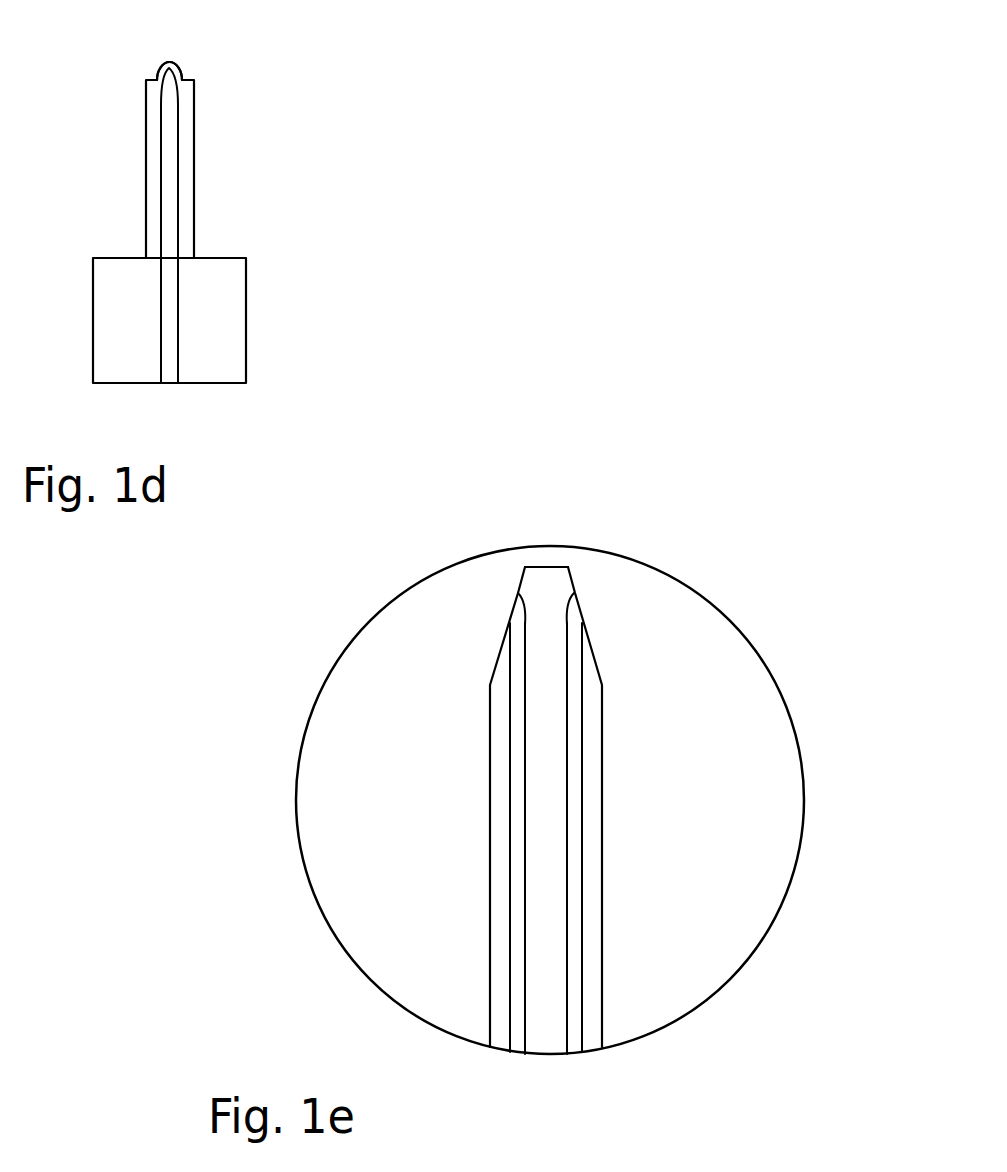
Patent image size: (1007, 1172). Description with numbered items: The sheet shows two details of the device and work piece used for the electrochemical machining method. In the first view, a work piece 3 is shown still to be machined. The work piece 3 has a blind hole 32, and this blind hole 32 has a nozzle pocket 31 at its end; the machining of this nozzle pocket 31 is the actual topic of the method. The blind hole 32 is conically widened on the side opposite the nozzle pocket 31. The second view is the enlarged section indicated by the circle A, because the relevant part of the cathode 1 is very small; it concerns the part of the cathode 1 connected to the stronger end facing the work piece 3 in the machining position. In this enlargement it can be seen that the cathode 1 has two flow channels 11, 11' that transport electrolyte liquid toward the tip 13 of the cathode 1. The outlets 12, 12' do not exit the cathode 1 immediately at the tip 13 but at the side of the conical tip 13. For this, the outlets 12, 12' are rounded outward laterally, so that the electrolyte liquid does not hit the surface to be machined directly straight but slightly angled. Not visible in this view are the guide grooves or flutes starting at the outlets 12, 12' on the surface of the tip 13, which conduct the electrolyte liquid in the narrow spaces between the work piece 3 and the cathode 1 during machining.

In FIG. 1E, the cathode 1 is at (593, 862).
In FIG. 1E, the flow channel 11 is at (719, 838).
In FIG. 1E, the flow channel 11' is at (367, 838).
In FIG. 1E, the outlet 12 is at (671, 587).
In FIG. 1E, the outlet 12' is at (418, 575).
In FIG. 1E, the tip 13 is at (545, 567).
In FIG. 1D, the work piece 3 is at (194, 222).
In FIG. 1D, the nozzle pocket 31 is at (167, 76).
In FIG. 1D, the blind hole 32 is at (172, 157).
In FIG. 1E, the circle indicating enlarged section A is at (353, 965).